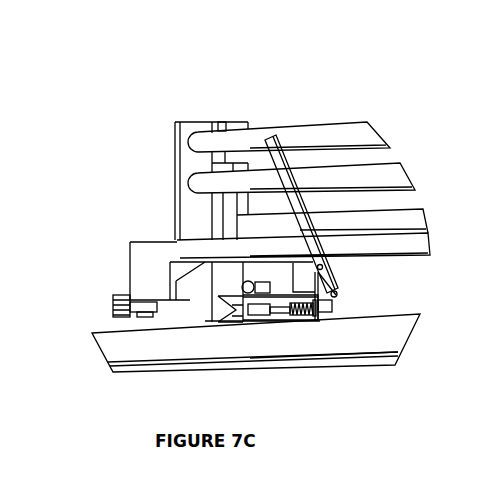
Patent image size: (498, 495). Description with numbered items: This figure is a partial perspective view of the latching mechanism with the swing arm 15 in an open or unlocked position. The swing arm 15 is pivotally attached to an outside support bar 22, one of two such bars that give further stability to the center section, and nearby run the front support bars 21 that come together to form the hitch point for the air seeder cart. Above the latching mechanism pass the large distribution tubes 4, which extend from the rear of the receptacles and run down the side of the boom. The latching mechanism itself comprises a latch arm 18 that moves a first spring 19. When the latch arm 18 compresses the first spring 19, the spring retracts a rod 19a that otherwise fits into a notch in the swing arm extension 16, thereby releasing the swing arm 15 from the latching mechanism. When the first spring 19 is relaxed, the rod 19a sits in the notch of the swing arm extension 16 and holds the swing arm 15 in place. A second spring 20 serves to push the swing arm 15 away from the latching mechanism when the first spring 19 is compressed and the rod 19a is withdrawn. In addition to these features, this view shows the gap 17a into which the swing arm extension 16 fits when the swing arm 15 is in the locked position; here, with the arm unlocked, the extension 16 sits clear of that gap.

The large distribution tubes 4 is at (233, 135).
The latch arm 18 is at (290, 183).
The second spring 20 is at (245, 283).
The swing arm 15 is at (185, 247).
The swing arm extension 16 is at (113, 305).
The gap 17a is at (218, 311).
The first spring 19 is at (302, 312).
The rod 19a is at (275, 306).
The front support bars 21 is at (133, 347).
The outside support bars 22 is at (368, 332).